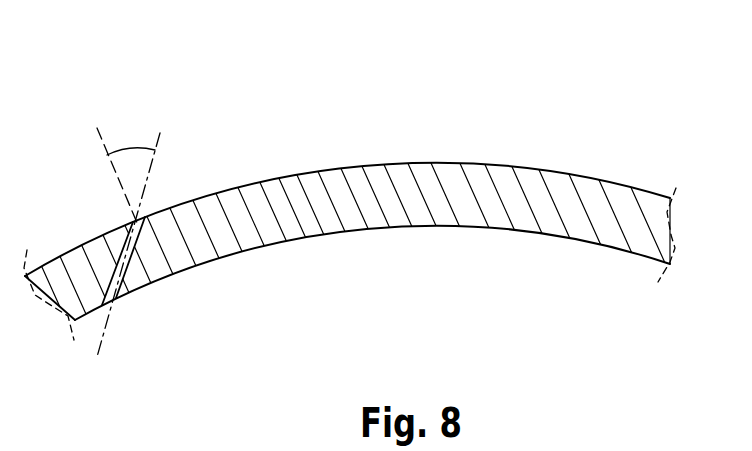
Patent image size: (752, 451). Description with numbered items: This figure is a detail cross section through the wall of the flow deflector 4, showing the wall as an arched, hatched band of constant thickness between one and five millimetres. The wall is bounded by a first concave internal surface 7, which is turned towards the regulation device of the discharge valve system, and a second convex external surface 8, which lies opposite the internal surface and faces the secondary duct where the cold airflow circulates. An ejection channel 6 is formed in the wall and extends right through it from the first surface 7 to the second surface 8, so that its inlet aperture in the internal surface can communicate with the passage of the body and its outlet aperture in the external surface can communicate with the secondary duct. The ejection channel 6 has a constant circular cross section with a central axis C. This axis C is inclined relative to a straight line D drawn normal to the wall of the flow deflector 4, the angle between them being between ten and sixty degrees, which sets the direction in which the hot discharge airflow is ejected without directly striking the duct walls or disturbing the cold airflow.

The flow deflector 4 is at (648, 90).
The ejection channel 6 is at (119, 254).
The first concave internal surface 7 is at (510, 232).
The second convex external surface 8 is at (527, 168).
The straight line normal to the wall D is at (100, 140).
The central axis of the ejection channel C is at (163, 142).